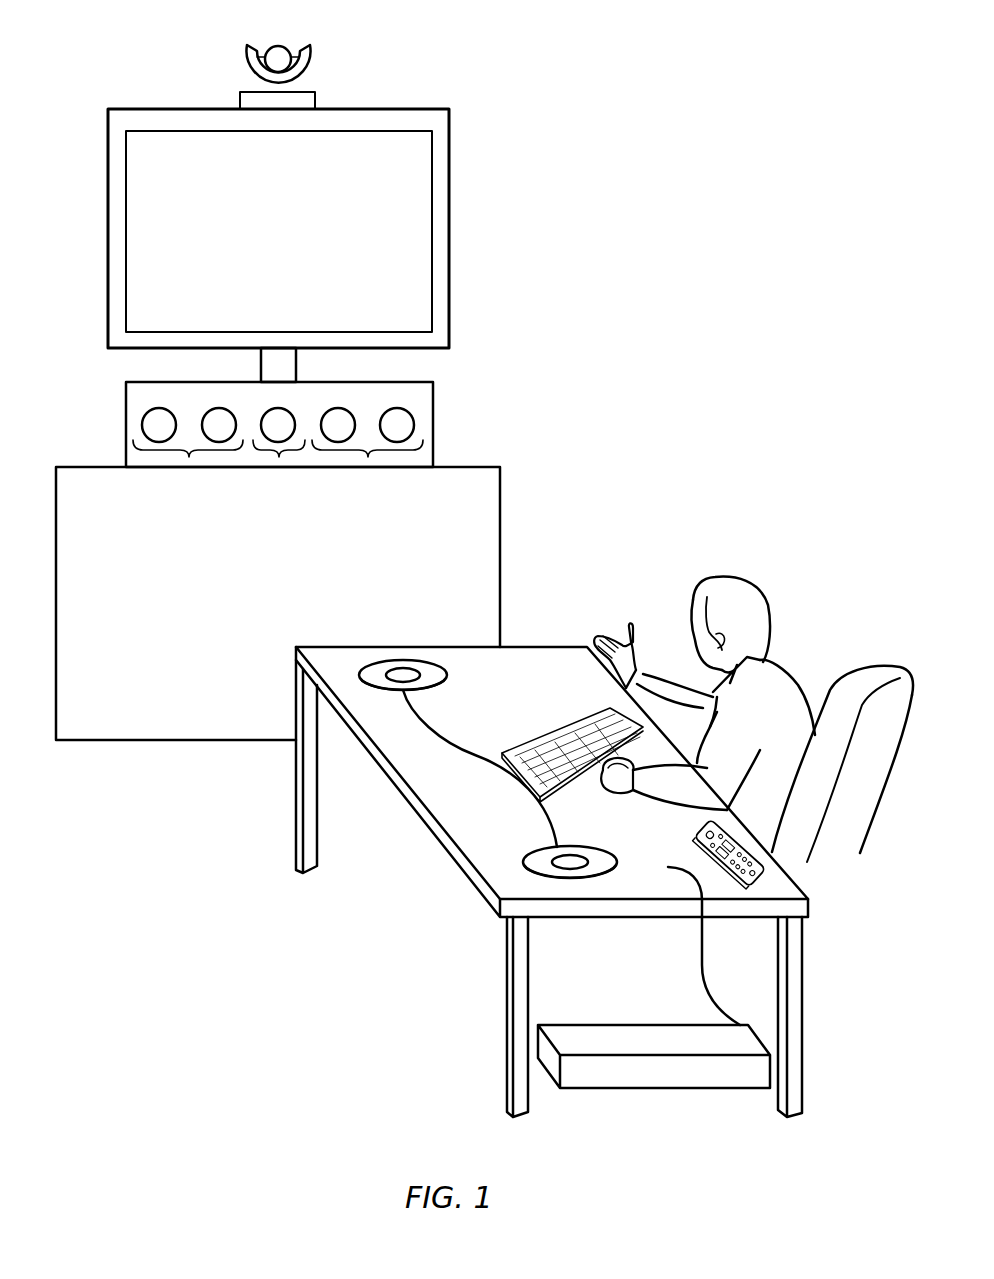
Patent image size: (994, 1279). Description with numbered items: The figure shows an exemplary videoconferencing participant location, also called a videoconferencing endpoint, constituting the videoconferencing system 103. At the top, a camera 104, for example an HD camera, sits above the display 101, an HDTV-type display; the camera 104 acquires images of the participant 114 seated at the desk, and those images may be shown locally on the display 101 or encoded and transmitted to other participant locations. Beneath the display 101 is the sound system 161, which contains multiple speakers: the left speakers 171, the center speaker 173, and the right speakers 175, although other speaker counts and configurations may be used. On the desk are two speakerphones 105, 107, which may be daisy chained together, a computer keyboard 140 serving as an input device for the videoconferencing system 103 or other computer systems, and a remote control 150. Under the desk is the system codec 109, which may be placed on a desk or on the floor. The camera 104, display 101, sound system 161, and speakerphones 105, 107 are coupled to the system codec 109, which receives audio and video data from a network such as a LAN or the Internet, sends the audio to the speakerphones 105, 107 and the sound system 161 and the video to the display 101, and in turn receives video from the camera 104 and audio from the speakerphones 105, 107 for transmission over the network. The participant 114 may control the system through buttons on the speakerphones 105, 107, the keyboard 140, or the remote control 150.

The display 101 is at (401, 176).
The videoconferencing system 103 is at (570, 113).
The camera 104 is at (311, 53).
The speakerphone 105 is at (543, 845).
The speakerphone 107 is at (447, 676).
The system codec 109 is at (680, 1089).
The participant 114 is at (752, 593).
The computer keyboard 140 is at (562, 725).
The remote control 150 is at (693, 830).
The sound system 161 is at (433, 397).
The left speakers 171 is at (189, 457).
The center speaker 173 is at (279, 457).
The right speakers 175 is at (368, 457).